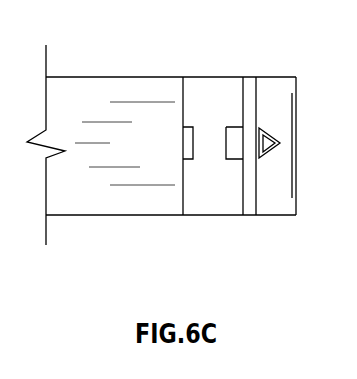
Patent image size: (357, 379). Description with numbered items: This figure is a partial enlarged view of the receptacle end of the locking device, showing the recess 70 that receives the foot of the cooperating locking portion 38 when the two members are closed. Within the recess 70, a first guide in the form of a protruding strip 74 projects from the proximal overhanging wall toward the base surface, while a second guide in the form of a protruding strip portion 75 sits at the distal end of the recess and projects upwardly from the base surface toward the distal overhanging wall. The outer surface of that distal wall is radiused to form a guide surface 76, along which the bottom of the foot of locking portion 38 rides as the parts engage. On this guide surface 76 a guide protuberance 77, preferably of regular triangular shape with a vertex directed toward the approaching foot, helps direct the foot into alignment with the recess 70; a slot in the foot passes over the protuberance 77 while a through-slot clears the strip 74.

The locking portion 38 is at (102, 92).
The recess 70 is at (212, 142).
The protruding strip 74 is at (193, 135).
The protruding strip portion 75 is at (228, 125).
The guide surface 76 is at (296, 188).
The guide protuberance 77 is at (267, 128).